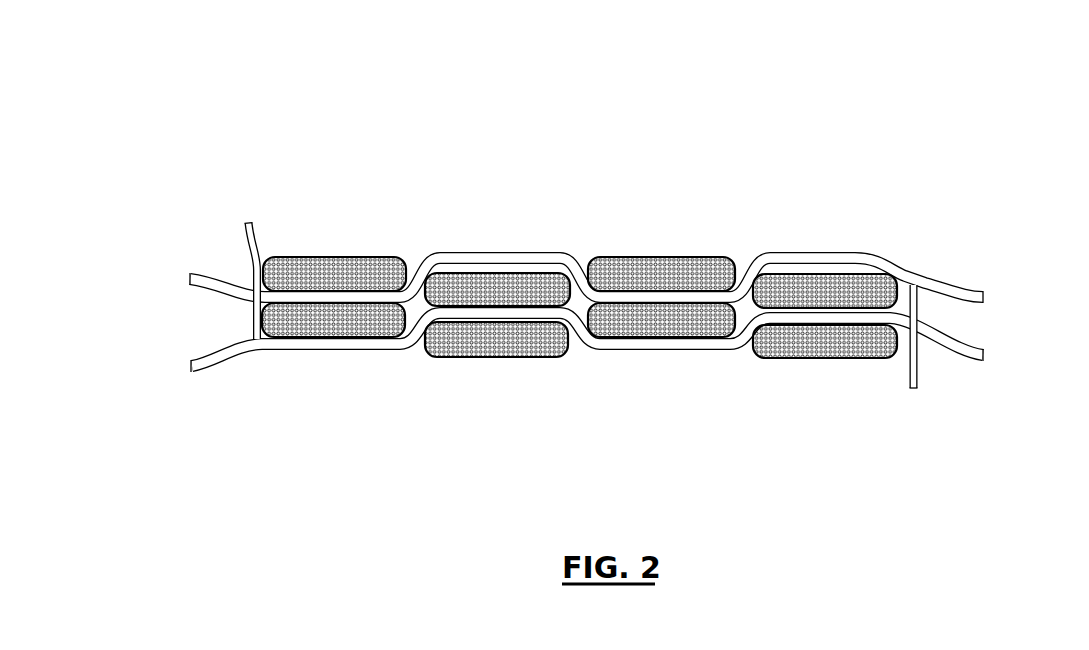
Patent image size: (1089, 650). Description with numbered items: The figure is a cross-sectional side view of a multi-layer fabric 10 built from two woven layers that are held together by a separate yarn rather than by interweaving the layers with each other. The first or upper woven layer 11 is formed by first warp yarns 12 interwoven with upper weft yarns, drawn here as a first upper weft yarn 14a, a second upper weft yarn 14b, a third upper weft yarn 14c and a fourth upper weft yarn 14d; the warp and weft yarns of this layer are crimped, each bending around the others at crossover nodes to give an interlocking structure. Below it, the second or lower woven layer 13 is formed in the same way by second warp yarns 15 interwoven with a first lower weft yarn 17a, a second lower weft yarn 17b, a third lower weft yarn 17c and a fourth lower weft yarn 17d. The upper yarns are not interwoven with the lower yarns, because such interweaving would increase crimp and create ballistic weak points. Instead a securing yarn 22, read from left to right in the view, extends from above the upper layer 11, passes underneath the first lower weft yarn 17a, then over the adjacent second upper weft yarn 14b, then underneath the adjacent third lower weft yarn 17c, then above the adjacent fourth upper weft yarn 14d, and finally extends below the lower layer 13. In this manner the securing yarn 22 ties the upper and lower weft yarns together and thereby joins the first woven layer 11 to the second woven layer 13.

The multi-layer fabric 10 is at (238, 114).
The first woven layer 11 is at (824, 238).
The first warp yarns 12 is at (213, 272).
The second woven layer 13 is at (794, 391).
The first upper weft yarn 14a is at (330, 272).
The second upper weft yarn 14b is at (500, 286).
The third upper weft yarn 14c is at (660, 272).
The fourth upper weft yarn 14d is at (852, 288).
The second warp yarns 15 is at (213, 362).
The first lower weft yarn 17a is at (318, 328).
The second lower weft yarn 17b is at (470, 338).
The third lower weft yarn 17c is at (648, 325).
The fourth lower weft yarn 17d is at (852, 355).
The securing yarn 22 is at (260, 230).